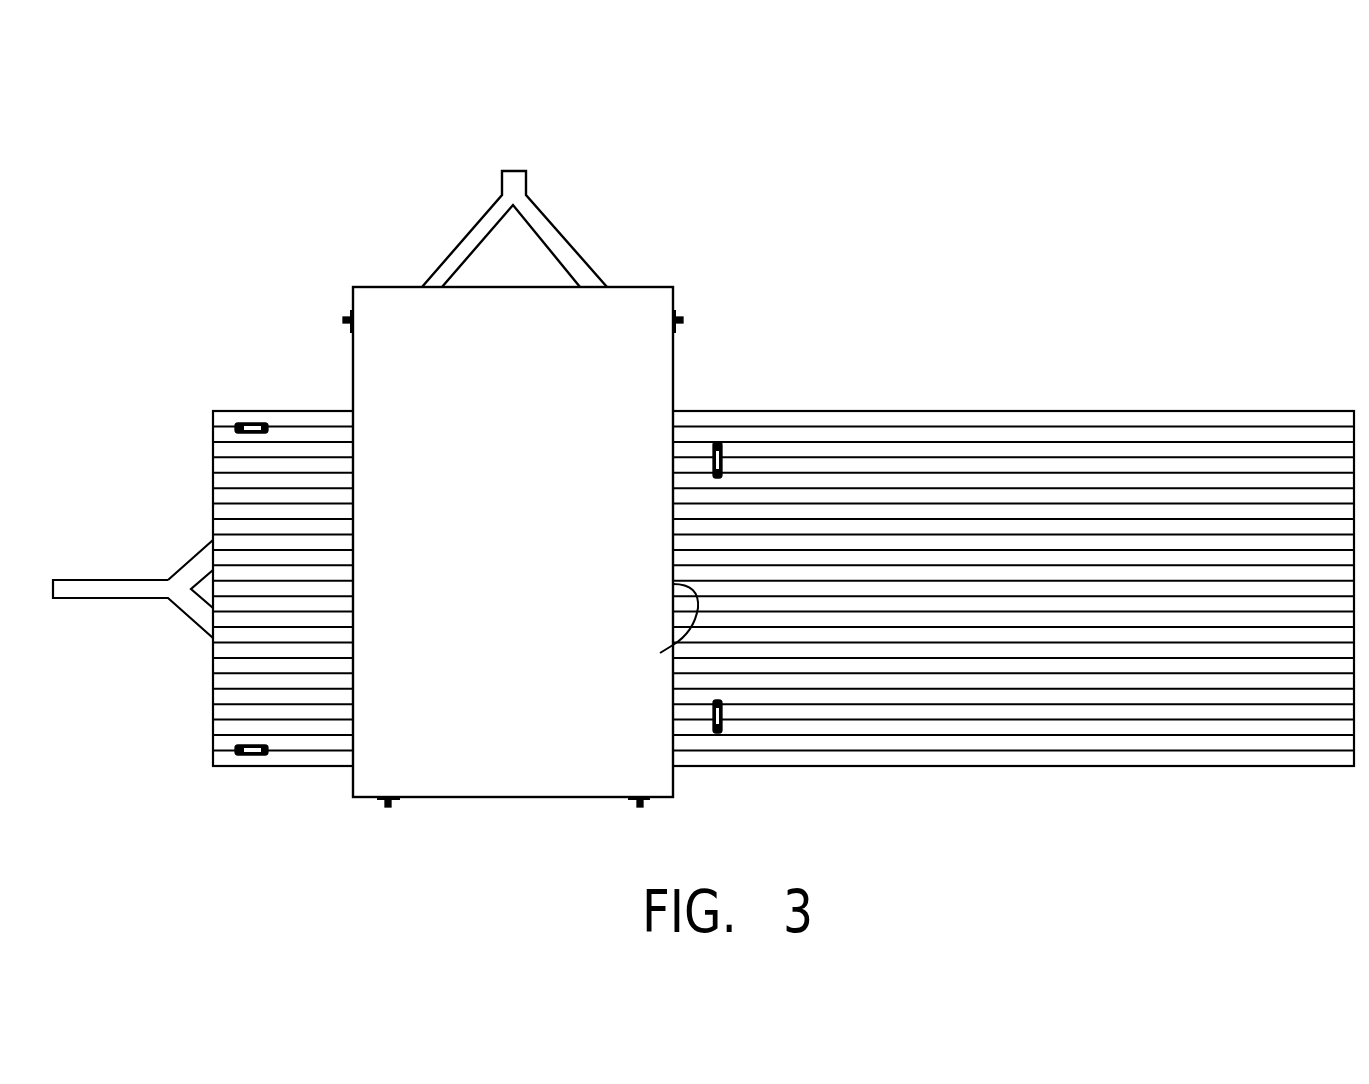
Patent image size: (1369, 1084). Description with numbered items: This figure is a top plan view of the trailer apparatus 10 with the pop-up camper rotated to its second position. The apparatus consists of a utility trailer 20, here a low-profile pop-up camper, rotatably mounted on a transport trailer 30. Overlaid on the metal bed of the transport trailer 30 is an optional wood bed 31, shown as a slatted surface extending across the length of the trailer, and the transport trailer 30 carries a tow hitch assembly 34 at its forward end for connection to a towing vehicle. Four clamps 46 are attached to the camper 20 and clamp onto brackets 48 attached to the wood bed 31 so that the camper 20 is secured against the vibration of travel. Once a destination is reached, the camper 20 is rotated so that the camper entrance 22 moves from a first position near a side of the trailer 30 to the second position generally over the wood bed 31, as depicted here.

The trailer apparatus 10 is at (1068, 170).
The utility trailer 20 is at (513, 484).
The camper entrance 22 is at (656, 627).
The transport trailer 30 is at (1270, 766).
The wood bed 31 is at (1182, 415).
The tow hitch assembly 34 is at (95, 598).
The clamps 46 is at (343, 320).
The brackets 48 is at (250, 423).